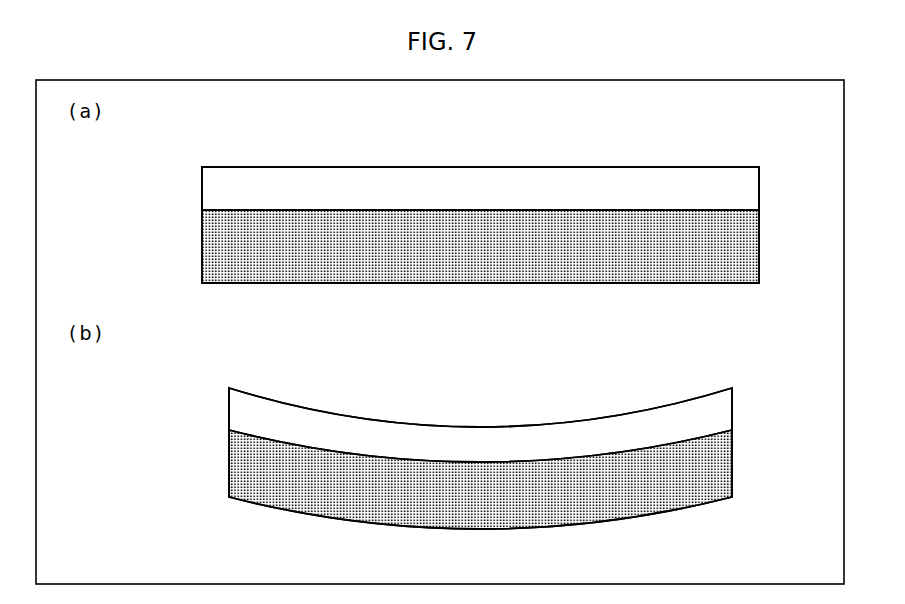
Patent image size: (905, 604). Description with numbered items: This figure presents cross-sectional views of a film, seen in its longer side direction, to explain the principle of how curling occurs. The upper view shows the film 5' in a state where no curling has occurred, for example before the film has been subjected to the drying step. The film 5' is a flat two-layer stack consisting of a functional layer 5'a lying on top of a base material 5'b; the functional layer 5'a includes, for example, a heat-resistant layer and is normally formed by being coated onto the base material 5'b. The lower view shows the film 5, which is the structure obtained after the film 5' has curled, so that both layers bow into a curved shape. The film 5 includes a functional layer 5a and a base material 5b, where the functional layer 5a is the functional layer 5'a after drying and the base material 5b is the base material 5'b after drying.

The film 5' is at (463, 218).
The functional layer 5'a is at (480, 167).
The base material 5'b is at (480, 270).
The film 5 is at (463, 452).
The functional layer 5a is at (481, 436).
The base material 5b is at (481, 520).